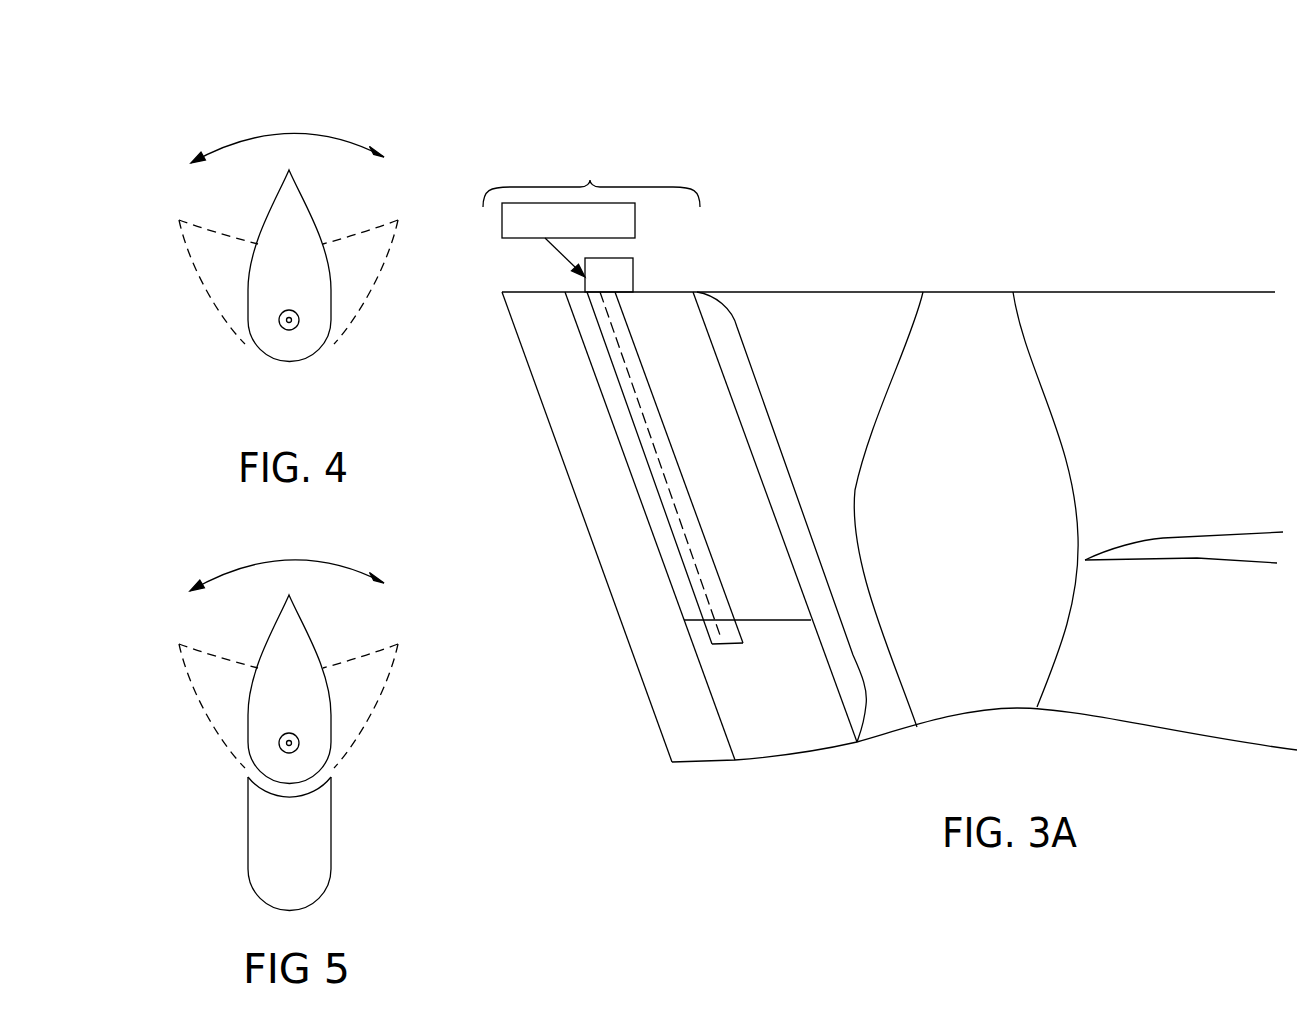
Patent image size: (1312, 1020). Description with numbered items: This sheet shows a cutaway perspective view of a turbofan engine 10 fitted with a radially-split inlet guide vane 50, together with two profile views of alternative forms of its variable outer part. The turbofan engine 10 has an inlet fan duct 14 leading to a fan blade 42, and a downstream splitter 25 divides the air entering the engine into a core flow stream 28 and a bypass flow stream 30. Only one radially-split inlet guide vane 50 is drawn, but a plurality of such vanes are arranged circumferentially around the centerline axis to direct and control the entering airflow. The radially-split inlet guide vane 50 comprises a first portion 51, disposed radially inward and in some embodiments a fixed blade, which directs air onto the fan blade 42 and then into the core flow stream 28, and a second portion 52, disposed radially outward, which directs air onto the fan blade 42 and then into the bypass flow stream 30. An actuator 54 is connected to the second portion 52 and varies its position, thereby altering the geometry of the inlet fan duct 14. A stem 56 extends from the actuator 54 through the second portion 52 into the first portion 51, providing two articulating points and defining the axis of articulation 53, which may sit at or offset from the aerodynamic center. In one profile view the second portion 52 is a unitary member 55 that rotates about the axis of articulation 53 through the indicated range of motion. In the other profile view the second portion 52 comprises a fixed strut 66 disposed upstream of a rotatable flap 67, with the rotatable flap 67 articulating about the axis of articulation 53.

In FIG. 3A, the turbofan engine 10 is at (1037, 245).
In FIG. 3A, the inlet fan duct 14 is at (570, 222).
In FIG. 3A, the downstream splitter 25 is at (1180, 535).
In FIG. 3A, the core flow stream 28 is at (1150, 659).
In FIG. 3A, the bypass flow stream 30 is at (1191, 398).
In FIG. 3A, the fan blade 42 is at (976, 514).
In FIG. 3A, the radially-split inlet guide vane 50 is at (793, 480).
In FIG. 3A, the first portion 51 is at (800, 762).
In FIG. 4, the second portion 52 is at (160, 122).
In FIG. 5, the second portion 52 is at (160, 548).
In FIG. 3A, the second portion 52 is at (669, 292).
In FIG. 4, the axis of articulation 53 is at (292, 330).
In FIG. 5, the axis of articulation 53 is at (279, 745).
In FIG. 3A, the axis of articulation 53 is at (637, 385).
In FIG. 3A, the actuator 54 is at (502, 230).
In FIG. 4, the unitary member 55 is at (247, 363).
In FIG. 3A, the unitary member 55 is at (721, 462).
In FIG. 3A, the stem 56 is at (728, 645).
In FIG. 5, the fixed strut 66 is at (331, 843).
In FIG. 5, the rotatable flap 67 is at (318, 718).